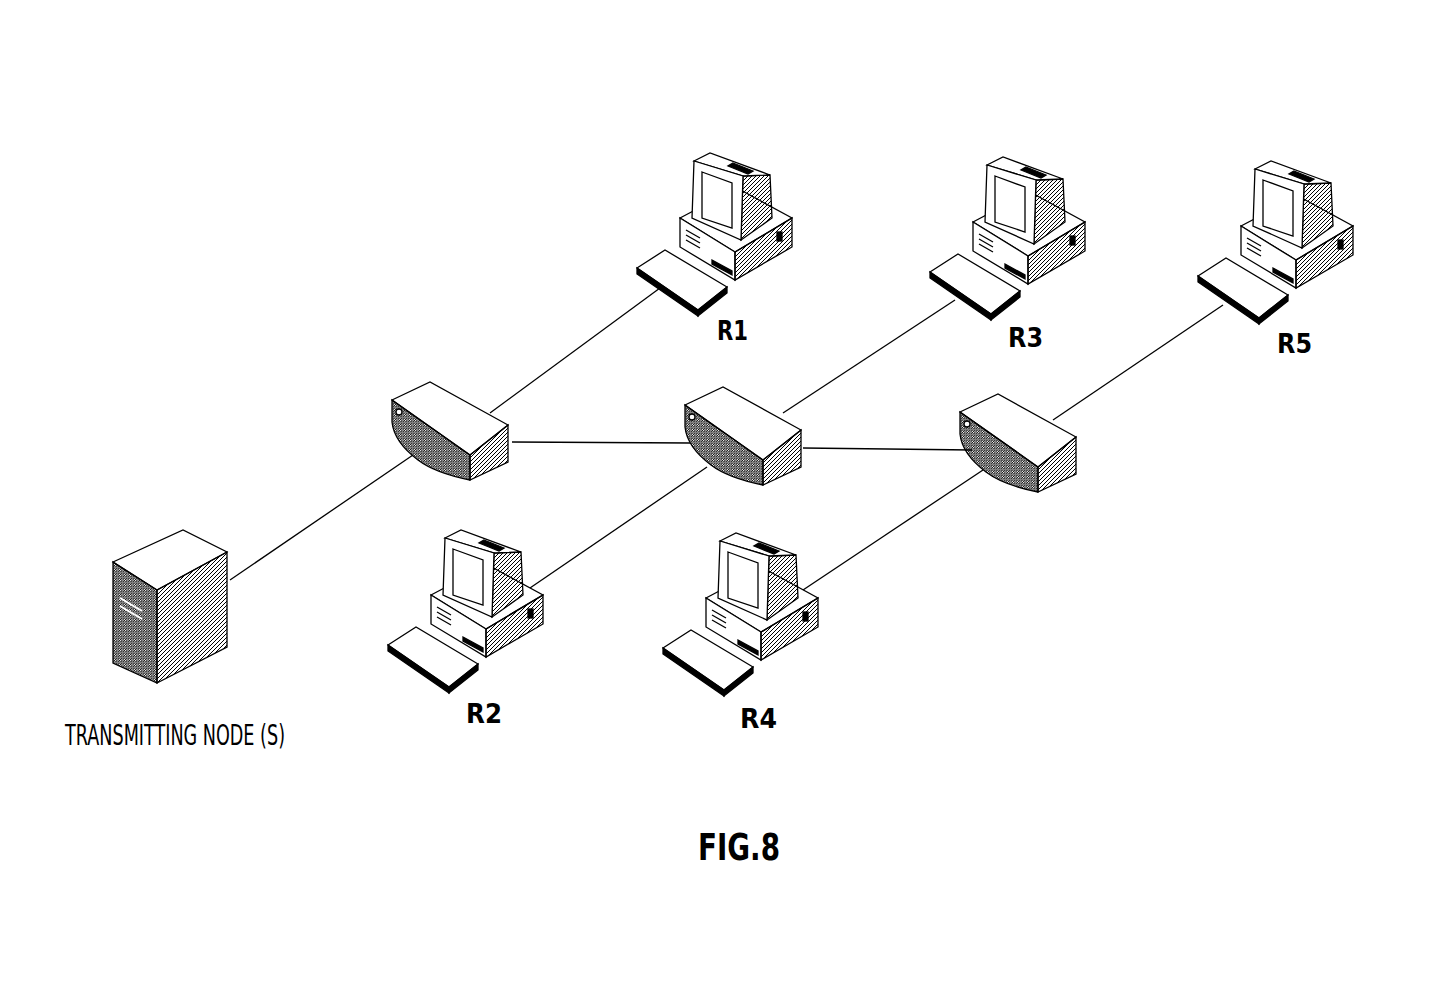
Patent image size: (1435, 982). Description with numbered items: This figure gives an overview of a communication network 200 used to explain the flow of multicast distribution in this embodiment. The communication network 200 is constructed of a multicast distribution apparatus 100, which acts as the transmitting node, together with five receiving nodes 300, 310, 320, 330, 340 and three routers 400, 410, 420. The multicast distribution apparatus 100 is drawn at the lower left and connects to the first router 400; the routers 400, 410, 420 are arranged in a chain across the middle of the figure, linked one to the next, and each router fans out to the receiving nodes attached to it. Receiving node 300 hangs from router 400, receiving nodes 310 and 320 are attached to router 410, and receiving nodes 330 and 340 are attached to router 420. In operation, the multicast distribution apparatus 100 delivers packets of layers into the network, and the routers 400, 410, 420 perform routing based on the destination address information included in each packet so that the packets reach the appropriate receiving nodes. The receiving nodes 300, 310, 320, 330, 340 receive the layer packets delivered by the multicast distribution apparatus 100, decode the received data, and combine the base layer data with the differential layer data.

The multicast distribution apparatus 100 is at (186, 536).
The communication network 200 is at (1238, 120).
The receiving node 300 is at (768, 182).
The receiving node 310 is at (483, 604).
The receiving node 320 is at (1034, 238).
The receiving node 330 is at (758, 608).
The receiving node 340 is at (1302, 242).
The router 400 is at (505, 425).
The router 410 is at (776, 436).
The router 420 is at (1051, 443).